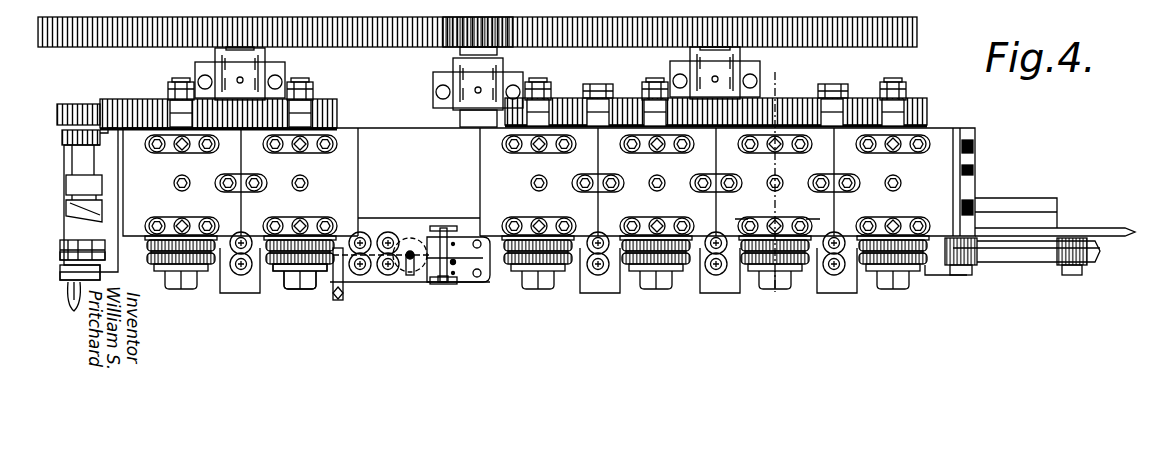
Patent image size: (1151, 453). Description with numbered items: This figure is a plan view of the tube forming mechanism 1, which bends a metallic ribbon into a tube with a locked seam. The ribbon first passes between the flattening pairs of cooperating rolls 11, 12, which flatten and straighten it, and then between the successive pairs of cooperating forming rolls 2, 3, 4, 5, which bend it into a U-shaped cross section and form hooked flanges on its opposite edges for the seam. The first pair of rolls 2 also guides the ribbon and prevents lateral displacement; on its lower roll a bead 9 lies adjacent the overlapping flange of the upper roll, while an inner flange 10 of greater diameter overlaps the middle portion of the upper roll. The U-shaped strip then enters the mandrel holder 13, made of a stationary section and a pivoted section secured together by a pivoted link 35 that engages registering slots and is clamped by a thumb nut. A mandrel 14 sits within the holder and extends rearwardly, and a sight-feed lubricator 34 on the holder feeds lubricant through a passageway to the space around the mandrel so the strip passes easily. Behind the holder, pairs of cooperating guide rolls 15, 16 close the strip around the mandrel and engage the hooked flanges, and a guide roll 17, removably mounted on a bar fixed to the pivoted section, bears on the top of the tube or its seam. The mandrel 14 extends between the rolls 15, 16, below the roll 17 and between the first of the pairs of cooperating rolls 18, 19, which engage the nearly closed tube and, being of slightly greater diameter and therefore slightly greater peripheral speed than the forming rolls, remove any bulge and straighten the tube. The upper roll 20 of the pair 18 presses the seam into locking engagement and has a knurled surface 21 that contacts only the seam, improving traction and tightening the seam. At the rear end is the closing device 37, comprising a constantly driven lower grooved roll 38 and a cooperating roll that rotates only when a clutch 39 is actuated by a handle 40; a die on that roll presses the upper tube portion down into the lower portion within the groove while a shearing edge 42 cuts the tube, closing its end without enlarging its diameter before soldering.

The tube forming mechanism 1 is at (992, 159).
The pair of cooperating forming rolls 2 is at (873, 265).
The pair of cooperating forming rolls 3 is at (790, 268).
The pair of cooperating forming rolls 4 is at (640, 268).
The pair of cooperating forming rolls 5 is at (522, 268).
The bead 9 is at (773, 180).
The inner flange 10 is at (777, 220).
The flattening pair of cooperating rolls 11 is at (960, 268).
The flattening pair of cooperating rolls 12 is at (1068, 268).
The mandrel holder 13 is at (460, 292).
The mandrel 14 is at (380, 244).
The pair of cooperating guide rolls 15 is at (390, 276).
The pair of cooperating guide rolls 16 is at (362, 276).
The guide roll 17 is at (345, 238).
The pair of cooperating rolls 18 is at (302, 295).
The pair of cooperating rolls 19 is at (200, 285).
The upper roll 20 is at (281, 272).
The knurled surface 21 is at (280, 268).
The lubricator 34 is at (412, 250).
The pivoted link 35 is at (456, 262).
The closing device 37 is at (62, 258).
The lower grooved roll 38 is at (68, 305).
The clutch 39 is at (68, 210).
The handle 40 is at (58, 291).
The shearing edge 42 is at (62, 254).